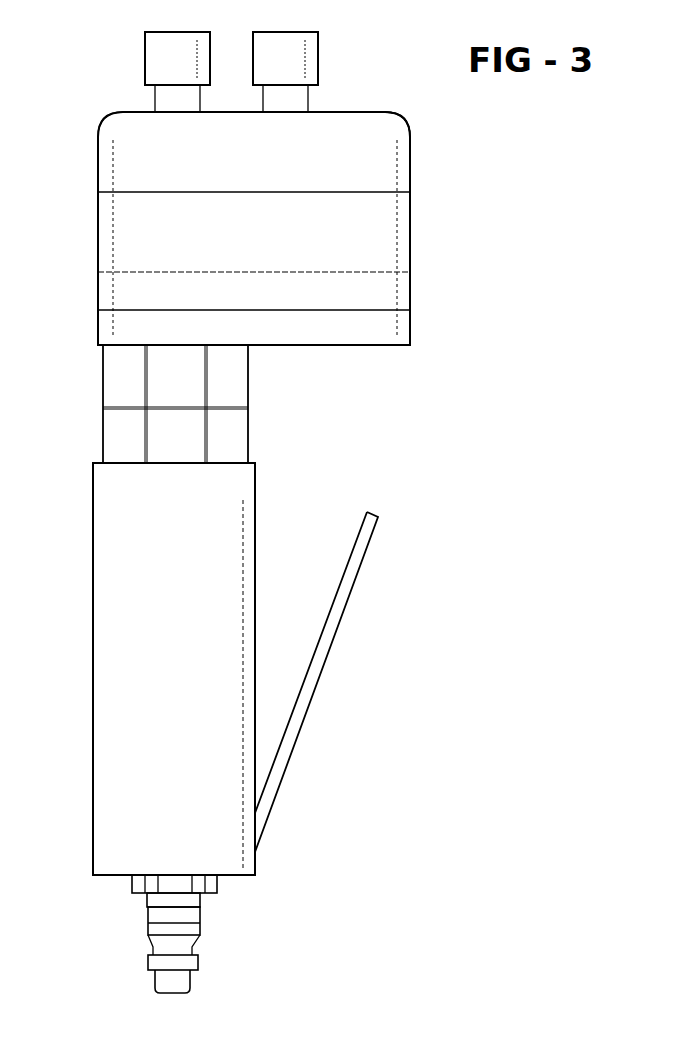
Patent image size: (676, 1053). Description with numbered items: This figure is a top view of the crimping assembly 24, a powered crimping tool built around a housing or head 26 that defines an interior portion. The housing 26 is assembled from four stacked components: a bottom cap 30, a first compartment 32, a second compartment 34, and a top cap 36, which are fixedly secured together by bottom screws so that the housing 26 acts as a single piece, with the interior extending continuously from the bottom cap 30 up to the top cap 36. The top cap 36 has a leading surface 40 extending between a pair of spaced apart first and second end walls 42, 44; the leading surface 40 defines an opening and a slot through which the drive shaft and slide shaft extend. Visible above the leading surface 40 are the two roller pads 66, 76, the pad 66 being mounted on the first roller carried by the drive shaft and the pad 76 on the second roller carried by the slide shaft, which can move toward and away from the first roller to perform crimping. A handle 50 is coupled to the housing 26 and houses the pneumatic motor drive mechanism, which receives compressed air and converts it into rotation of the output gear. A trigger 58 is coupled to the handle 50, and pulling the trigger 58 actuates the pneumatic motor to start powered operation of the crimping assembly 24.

The crimping assembly 24 is at (91, 90).
The housing 26 is at (89, 236).
The bottom cap 30 is at (96, 324).
The first compartment 32 is at (96, 290).
The second compartment 34 is at (412, 238).
The top cap 36 is at (407, 120).
The leading surface 40 is at (243, 110).
The first end wall 42 is at (96, 167).
The second end wall 44 is at (412, 162).
The handle 50 is at (93, 662).
The trigger 58 is at (348, 600).
The roller pad 66 is at (145, 57).
The roller pad 76 is at (318, 53).